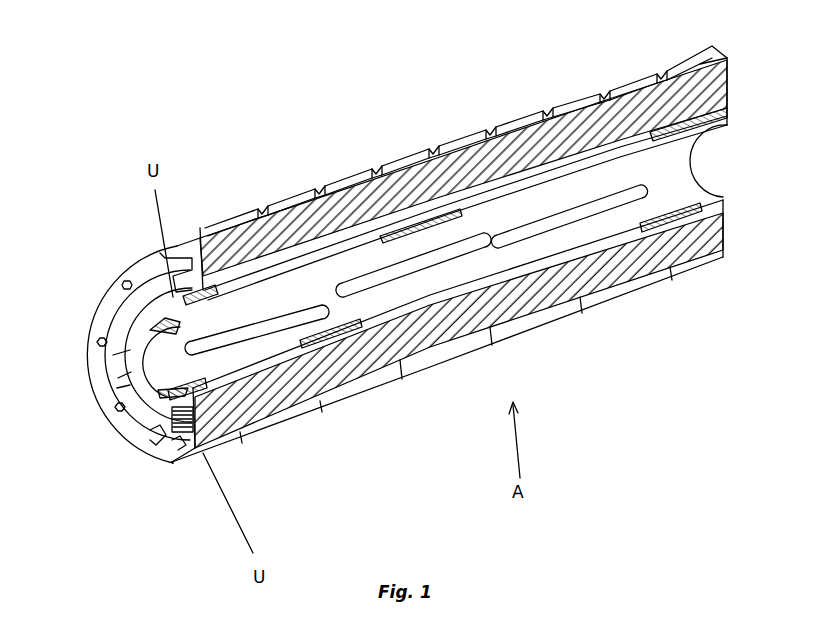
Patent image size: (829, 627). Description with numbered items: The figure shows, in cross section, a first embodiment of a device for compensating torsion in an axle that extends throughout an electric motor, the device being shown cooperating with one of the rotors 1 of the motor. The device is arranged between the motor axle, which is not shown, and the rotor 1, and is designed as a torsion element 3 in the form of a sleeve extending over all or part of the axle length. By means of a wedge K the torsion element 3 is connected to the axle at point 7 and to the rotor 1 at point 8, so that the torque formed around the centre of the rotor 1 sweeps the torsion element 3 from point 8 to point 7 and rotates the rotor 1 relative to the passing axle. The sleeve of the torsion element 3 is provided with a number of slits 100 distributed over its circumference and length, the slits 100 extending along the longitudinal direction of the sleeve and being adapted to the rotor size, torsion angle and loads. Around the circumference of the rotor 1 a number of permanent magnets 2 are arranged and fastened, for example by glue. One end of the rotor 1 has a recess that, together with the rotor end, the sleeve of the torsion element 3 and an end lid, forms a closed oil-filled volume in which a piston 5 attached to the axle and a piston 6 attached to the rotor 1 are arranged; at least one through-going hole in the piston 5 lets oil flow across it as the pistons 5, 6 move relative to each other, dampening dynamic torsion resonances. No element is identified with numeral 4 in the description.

The rotor 1 is at (453, 182).
The permanent magnets 2 is at (327, 197).
The torsion element 3 is at (255, 312).
The flange boss 4 is at (156, 300).
The piston 5 is at (118, 345).
The piston 6 is at (168, 435).
The point 7 is at (186, 331).
The point 8 is at (707, 220).
The wedge K is at (727, 110).
The slits 100 is at (280, 320).